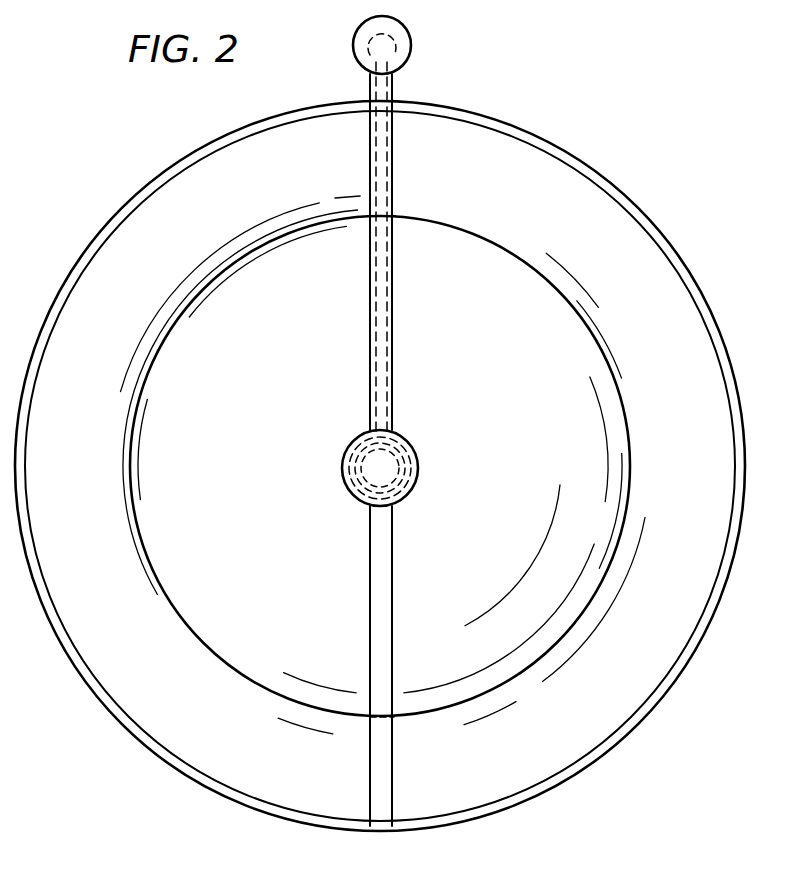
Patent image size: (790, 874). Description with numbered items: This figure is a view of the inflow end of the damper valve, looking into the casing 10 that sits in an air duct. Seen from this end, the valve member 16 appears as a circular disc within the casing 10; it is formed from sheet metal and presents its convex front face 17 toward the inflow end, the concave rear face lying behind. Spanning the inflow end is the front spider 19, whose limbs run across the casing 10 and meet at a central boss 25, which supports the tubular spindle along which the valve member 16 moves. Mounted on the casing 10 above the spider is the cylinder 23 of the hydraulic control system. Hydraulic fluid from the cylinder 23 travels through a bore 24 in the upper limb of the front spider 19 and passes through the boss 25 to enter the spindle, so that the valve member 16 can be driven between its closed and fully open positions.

The casing 10 is at (556, 143).
The valve member 16 is at (380, 466).
The convex front face 17 is at (550, 335).
The front spider 19 is at (393, 168).
The cylinder 23 is at (404, 32).
The bore 24 is at (384, 287).
The boss 25 is at (385, 466).